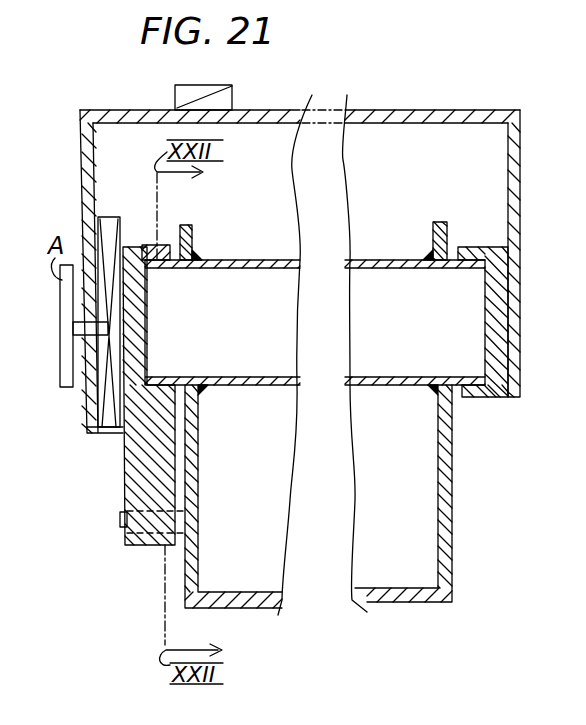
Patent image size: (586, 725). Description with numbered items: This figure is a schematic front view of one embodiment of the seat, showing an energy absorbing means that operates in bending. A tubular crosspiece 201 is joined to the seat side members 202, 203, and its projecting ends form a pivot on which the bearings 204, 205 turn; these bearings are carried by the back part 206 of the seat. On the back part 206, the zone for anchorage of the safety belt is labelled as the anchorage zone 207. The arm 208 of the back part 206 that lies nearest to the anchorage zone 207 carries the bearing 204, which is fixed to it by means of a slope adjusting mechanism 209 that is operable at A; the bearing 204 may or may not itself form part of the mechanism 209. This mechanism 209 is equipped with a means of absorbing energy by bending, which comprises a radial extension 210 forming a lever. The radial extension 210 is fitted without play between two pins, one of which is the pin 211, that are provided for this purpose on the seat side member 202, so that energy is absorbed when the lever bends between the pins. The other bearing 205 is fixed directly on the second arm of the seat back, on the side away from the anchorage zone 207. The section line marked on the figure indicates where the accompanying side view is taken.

The tubular crosspiece 201 is at (236, 246).
The seat side member 202 is at (198, 498).
The seat side member 203 is at (440, 500).
The bearing 204 is at (130, 247).
The bearing 205 is at (492, 250).
The back part 206 is at (250, 111).
The anchorage zone 207 is at (188, 86).
The arm 208 is at (95, 180).
The slope adjusting mechanism 209 is at (112, 433).
The radial extension 210 is at (152, 478).
The pin 211 is at (122, 525).